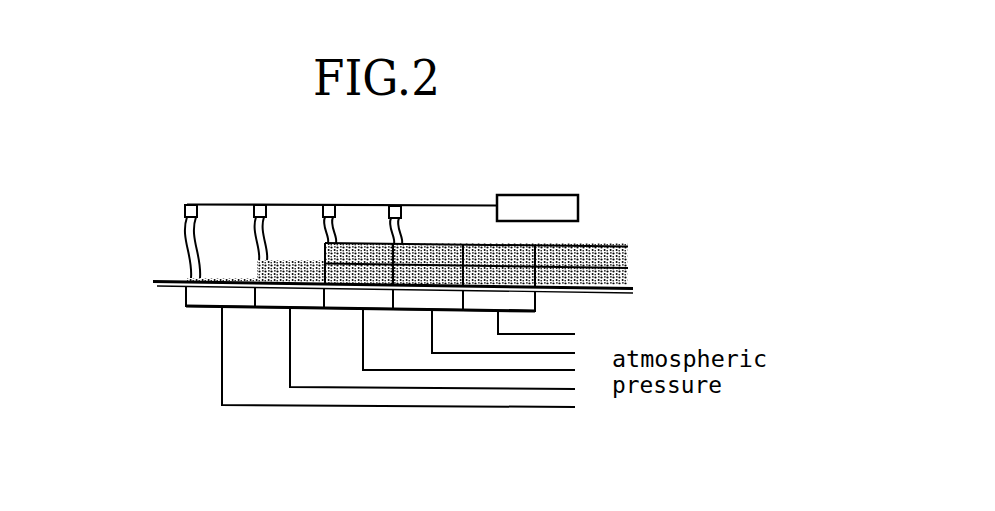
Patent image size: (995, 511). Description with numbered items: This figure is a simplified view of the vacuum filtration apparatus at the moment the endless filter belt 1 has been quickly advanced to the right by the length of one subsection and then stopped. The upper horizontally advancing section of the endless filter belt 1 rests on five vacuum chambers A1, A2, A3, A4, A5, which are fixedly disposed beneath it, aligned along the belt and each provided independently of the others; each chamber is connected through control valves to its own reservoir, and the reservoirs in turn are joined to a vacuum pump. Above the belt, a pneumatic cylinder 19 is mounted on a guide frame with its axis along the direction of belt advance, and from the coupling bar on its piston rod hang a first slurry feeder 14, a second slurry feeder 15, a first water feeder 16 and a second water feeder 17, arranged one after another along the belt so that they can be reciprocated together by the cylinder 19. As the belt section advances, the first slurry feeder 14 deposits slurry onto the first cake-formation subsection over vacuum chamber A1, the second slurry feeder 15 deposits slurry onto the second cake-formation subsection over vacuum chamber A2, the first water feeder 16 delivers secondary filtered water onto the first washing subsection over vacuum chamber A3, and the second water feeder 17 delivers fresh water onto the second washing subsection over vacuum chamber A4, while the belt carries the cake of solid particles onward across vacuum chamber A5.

The endless filter belt 1 is at (165, 288).
The first slurry feeder 14 is at (191, 205).
The second slurry feeder 15 is at (259, 205).
The first water feeder 16 is at (329, 205).
The second water feeder 17 is at (395, 206).
The actuator (pneumatic cylinder) 19 is at (539, 195).
The vacuum chamber A1 is at (207, 297).
The vacuum chamber A2 is at (275, 297).
The vacuum chamber A3 is at (347, 298).
The vacuum chamber A4 is at (418, 302).
The vacuum chamber A5 is at (490, 300).